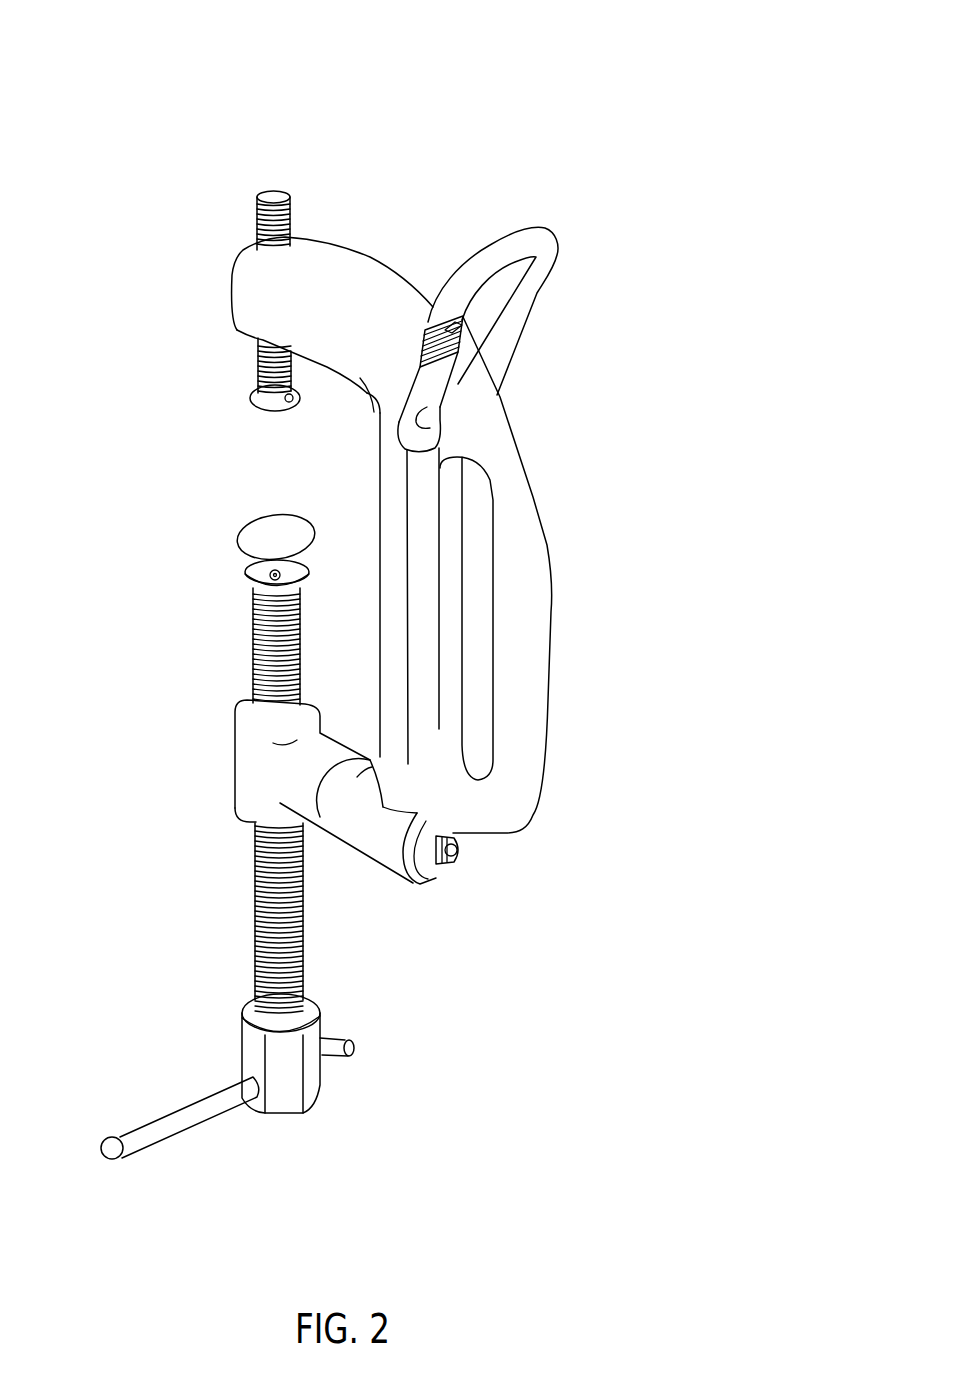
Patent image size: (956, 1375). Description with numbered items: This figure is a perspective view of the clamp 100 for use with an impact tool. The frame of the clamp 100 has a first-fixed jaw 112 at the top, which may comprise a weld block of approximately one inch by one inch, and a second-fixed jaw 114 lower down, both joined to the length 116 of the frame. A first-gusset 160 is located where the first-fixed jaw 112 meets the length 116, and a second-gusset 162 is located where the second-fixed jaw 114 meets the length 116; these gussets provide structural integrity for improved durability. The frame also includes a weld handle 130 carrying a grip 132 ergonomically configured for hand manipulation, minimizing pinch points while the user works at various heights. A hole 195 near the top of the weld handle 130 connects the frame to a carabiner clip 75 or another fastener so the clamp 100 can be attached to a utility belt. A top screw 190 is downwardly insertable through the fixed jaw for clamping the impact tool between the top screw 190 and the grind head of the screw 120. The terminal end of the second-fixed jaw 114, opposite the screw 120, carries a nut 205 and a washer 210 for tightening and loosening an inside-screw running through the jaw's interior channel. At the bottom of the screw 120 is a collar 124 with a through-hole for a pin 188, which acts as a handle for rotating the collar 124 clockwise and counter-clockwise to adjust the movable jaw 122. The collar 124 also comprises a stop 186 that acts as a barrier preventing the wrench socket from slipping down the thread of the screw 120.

The clamp 100 is at (729, 60).
The carabiner clip 75 is at (507, 263).
The first-fixed jaw 112 is at (340, 309).
The top screw 190 is at (257, 360).
The first-gusset 160 is at (373, 408).
The hole 195 is at (440, 446).
The grip 132 is at (493, 570).
The length of the frame 116 is at (380, 488).
The movable jaw 122 is at (253, 561).
The weld handle 130 is at (546, 644).
The second-gusset 162 is at (370, 767).
The second-fixed jaw 114 is at (374, 823).
The screw 120 is at (260, 910).
The nut 205 is at (457, 862).
The washer 210 is at (430, 867).
The pin 188 is at (183, 1113).
The stop 186 is at (308, 1013).
The collar 124 is at (295, 1110).